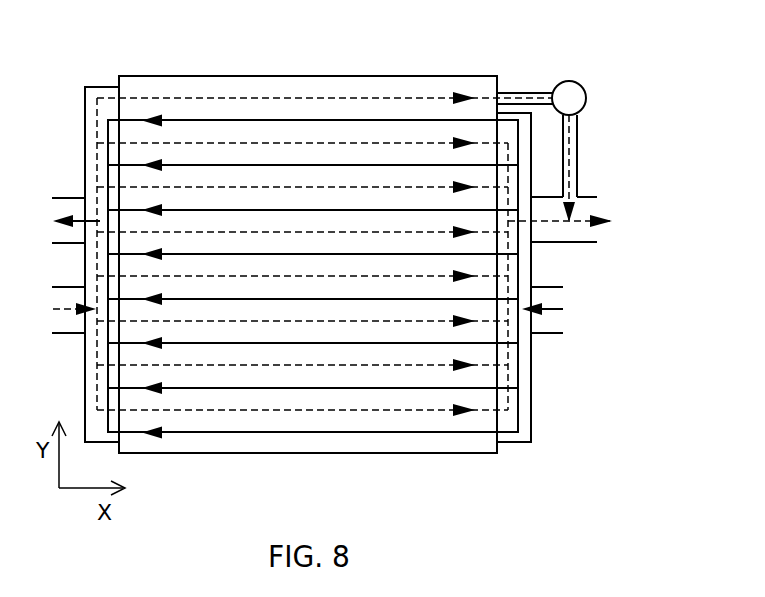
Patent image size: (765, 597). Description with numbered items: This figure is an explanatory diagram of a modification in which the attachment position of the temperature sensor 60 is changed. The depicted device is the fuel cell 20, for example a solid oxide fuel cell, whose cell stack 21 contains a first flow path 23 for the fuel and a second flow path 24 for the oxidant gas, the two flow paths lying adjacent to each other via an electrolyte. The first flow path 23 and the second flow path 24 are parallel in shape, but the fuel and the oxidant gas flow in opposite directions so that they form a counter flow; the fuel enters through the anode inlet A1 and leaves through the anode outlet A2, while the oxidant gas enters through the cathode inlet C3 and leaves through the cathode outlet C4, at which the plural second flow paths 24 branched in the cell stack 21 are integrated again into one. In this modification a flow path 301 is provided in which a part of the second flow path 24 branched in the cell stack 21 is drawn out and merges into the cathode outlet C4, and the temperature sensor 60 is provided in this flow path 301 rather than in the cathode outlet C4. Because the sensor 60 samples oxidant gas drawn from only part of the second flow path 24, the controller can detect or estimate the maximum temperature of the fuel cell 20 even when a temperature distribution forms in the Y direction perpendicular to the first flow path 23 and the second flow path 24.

The fuel cell 20 is at (98, 50).
The cell stack 21 is at (201, 75).
The first flow path 23 is at (378, 120).
The second flow path 24 is at (293, 97).
The flow path 301 is at (533, 93).
The temperature sensor 60 is at (578, 86).
The anode inlet A1 is at (552, 334).
The anode outlet A2 is at (63, 197).
The cathode inlet C3 is at (63, 334).
The cathode outlet C4 is at (578, 243).